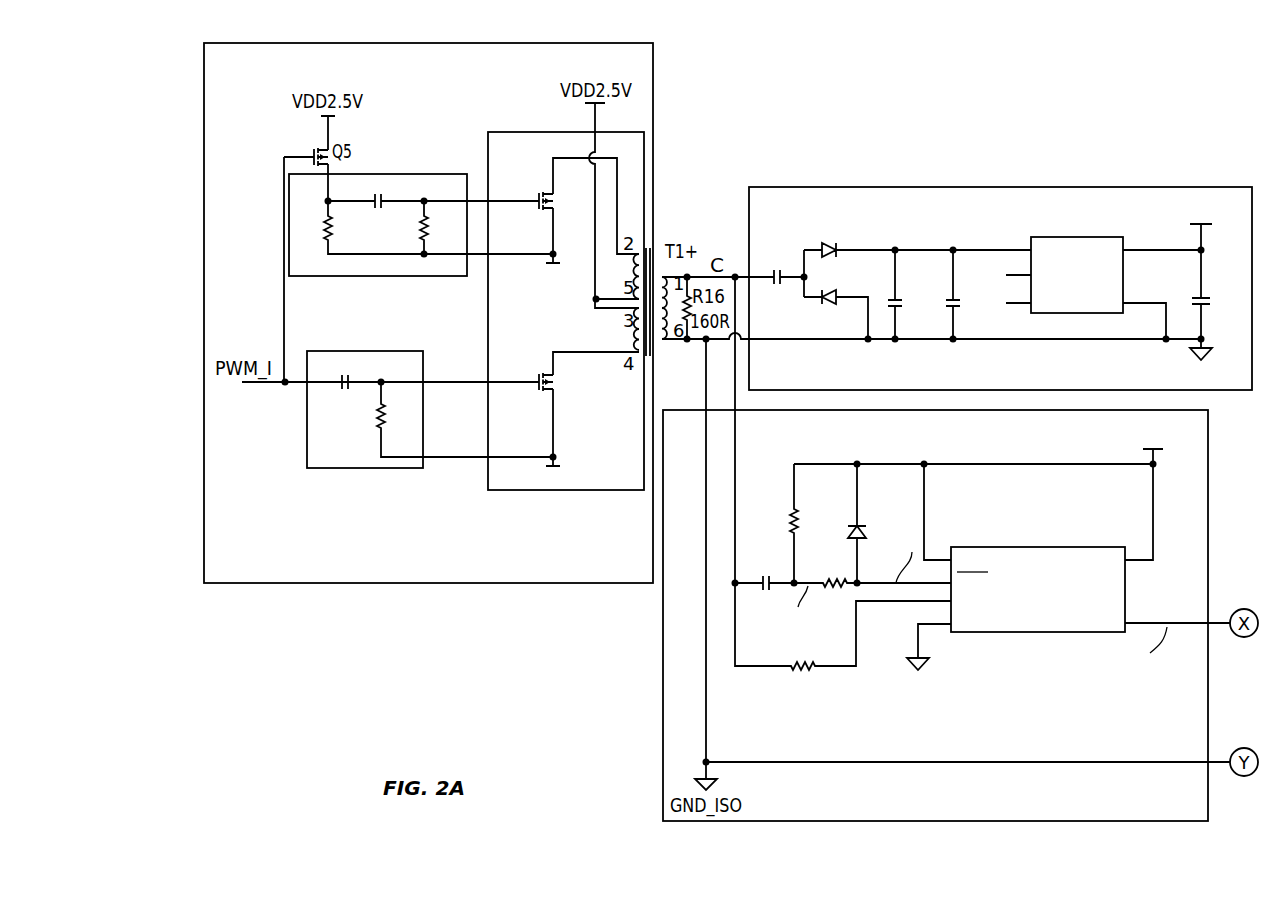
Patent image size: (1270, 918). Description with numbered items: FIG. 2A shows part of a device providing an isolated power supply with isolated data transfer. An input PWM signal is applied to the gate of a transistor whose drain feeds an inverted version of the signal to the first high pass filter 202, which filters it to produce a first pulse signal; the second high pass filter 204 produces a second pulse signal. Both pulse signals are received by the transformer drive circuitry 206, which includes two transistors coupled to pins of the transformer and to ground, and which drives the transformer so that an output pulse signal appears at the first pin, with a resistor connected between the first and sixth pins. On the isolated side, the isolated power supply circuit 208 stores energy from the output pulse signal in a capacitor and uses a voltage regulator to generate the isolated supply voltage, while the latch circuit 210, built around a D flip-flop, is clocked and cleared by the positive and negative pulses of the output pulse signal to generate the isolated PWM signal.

The first high pass filter 202 is at (404, 174).
The second high pass filter 204 is at (307, 419).
The transformer drive circuitry 206 is at (488, 473).
The isolated power supply circuit 208 is at (975, 187).
The latch circuit 210 is at (663, 678).